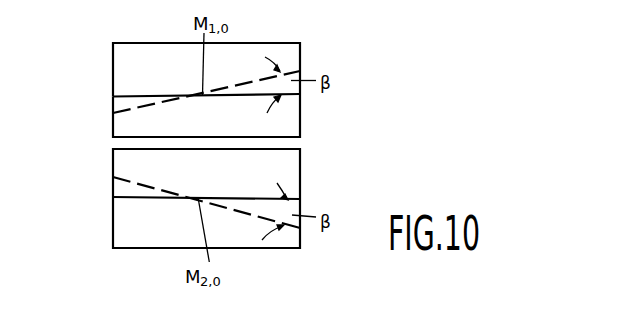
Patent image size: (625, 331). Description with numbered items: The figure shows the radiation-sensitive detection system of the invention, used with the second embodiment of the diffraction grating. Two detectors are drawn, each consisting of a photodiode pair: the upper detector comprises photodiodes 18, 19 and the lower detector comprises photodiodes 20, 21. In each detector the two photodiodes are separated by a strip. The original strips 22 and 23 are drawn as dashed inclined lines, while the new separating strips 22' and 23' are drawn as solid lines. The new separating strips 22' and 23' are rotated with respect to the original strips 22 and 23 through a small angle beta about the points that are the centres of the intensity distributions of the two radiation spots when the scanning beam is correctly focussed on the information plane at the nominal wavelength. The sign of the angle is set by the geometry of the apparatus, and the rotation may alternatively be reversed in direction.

The photodiode 18 is at (123, 59).
The photodiode 19 is at (127, 124).
The original strip 22 is at (182, 100).
The separating strip 22' is at (182, 89).
The photodiode 20 is at (132, 158).
The photodiode 21 is at (132, 230).
The original strip 23 is at (182, 202).
The separating strip 23' is at (182, 210).